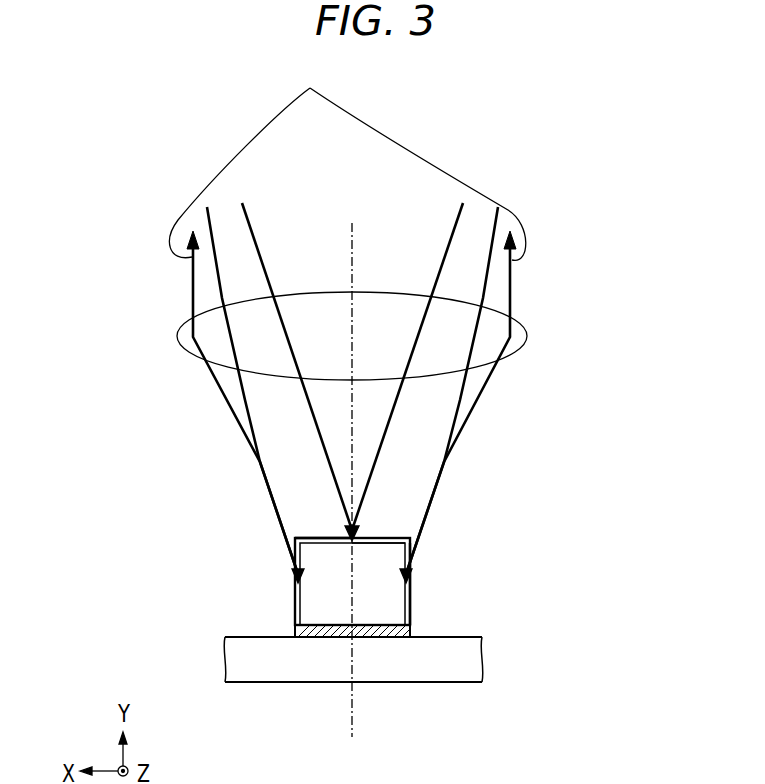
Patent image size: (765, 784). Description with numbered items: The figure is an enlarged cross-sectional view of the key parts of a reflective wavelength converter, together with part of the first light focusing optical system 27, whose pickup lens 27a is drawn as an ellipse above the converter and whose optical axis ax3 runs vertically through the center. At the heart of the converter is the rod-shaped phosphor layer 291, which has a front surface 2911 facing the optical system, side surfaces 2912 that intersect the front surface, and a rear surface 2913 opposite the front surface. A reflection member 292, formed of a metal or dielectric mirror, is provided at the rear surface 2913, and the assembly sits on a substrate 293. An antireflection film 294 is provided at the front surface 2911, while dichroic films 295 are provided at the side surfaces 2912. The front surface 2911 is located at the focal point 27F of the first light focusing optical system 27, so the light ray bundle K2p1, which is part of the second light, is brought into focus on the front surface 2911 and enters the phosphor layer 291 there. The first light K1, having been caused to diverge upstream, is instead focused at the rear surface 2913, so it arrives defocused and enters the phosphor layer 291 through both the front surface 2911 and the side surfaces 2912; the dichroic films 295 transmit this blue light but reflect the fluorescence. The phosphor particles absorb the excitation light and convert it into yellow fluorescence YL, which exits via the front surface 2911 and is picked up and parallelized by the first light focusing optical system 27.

The fluorescence YL is at (348, 159).
The optical axis of the lens ax3 is at (352, 250).
The first light focusing optical system 27 is at (430, 336).
The pickup lens 27a is at (518, 330).
The focal point 27F is at (360, 526).
The first light K1 is at (443, 444).
The light ray bundle K2p1 is at (305, 395).
The phosphor layer 291 is at (320, 592).
The front surface 2911 is at (325, 540).
The side surfaces 2912 is at (408, 605).
The rear surface 2913 is at (375, 638).
The reflection member 292 is at (296, 632).
The substrate 293 is at (448, 661).
The antireflection film 294 is at (393, 538).
The dichroic films 295 is at (295, 558).